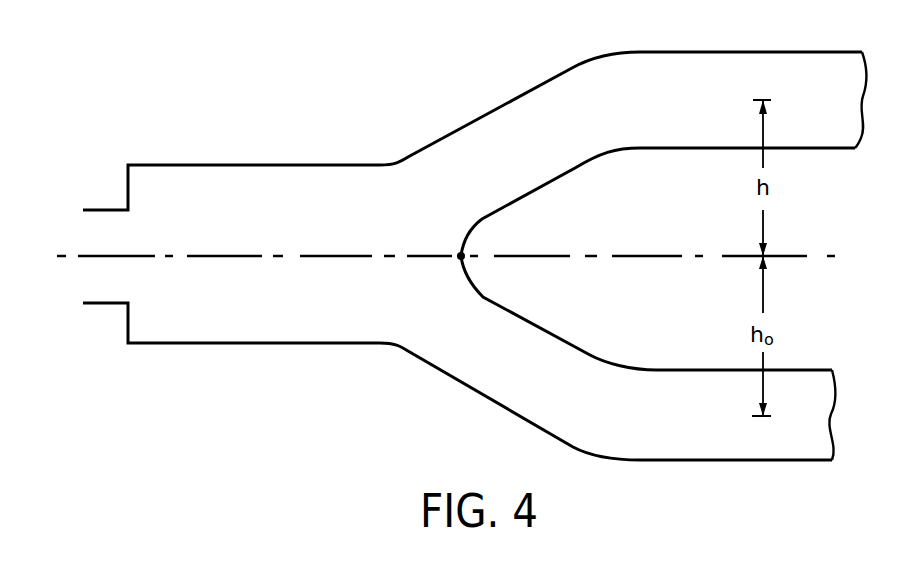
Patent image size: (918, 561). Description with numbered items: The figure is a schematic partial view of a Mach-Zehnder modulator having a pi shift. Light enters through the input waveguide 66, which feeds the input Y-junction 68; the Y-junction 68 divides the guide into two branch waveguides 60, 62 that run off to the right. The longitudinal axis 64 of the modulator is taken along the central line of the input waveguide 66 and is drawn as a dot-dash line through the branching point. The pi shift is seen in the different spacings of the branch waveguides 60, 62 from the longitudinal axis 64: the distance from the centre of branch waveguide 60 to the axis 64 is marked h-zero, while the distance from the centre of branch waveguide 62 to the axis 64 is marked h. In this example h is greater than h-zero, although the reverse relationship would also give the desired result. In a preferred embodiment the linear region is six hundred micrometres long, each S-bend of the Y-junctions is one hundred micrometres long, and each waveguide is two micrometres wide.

The branch waveguide 60 is at (772, 447).
The branch waveguide 62 is at (693, 72).
The longitudinal axis 64 is at (797, 255).
The input waveguide 66 is at (107, 233).
The input Y-junction 68 is at (370, 120).